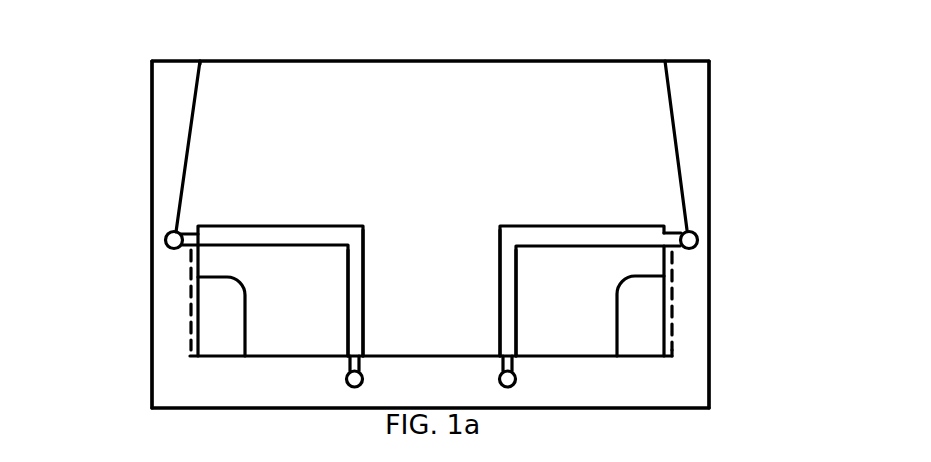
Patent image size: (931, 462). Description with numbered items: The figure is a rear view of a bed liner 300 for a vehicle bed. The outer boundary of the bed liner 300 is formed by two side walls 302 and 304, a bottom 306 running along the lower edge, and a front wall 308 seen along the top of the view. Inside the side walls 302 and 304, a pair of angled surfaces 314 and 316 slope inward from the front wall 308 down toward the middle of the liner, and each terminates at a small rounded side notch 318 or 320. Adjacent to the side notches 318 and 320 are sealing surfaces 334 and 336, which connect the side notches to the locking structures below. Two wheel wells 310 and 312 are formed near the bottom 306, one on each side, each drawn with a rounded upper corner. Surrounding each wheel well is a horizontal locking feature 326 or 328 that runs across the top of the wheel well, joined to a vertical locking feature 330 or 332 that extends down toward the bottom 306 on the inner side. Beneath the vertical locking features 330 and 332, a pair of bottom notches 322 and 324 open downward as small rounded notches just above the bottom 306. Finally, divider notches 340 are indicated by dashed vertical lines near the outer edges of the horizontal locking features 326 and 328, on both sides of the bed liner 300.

The bed liner 300 is at (543, 40).
The side wall 302 is at (701, 96).
The side wall 304 is at (165, 88).
The bottom 306 is at (628, 392).
The front wall 308 is at (332, 67).
The wheel well 310 is at (638, 315).
The wheel well 312 is at (232, 328).
The angled surface 314 is at (676, 146).
The angled surface 316 is at (187, 157).
The side notch 318 is at (692, 226).
The side notch 320 is at (165, 241).
The bottom notch 322 is at (517, 378).
The bottom notch 324 is at (365, 378).
The horizontal locking feature 326 is at (545, 230).
The horizontal locking feature 328 is at (273, 232).
The vertical locking feature 330 is at (509, 318).
The vertical locking feature 332 is at (358, 296).
The sealing surface 334 is at (676, 262).
The sealing surface 336 is at (186, 250).
The divider notch 340 is at (193, 330).